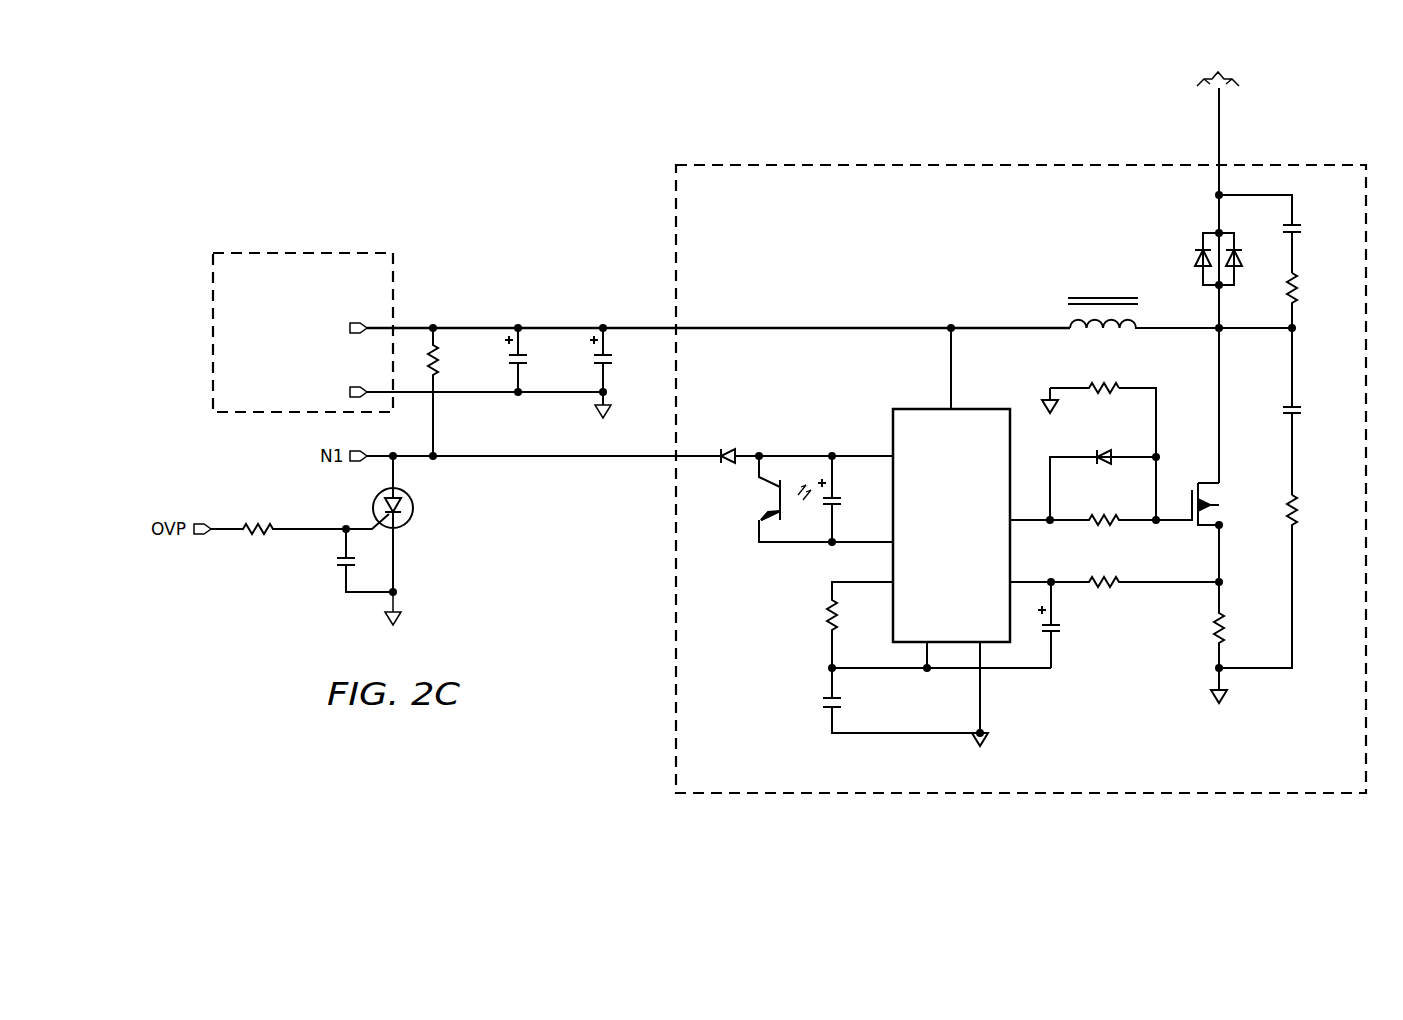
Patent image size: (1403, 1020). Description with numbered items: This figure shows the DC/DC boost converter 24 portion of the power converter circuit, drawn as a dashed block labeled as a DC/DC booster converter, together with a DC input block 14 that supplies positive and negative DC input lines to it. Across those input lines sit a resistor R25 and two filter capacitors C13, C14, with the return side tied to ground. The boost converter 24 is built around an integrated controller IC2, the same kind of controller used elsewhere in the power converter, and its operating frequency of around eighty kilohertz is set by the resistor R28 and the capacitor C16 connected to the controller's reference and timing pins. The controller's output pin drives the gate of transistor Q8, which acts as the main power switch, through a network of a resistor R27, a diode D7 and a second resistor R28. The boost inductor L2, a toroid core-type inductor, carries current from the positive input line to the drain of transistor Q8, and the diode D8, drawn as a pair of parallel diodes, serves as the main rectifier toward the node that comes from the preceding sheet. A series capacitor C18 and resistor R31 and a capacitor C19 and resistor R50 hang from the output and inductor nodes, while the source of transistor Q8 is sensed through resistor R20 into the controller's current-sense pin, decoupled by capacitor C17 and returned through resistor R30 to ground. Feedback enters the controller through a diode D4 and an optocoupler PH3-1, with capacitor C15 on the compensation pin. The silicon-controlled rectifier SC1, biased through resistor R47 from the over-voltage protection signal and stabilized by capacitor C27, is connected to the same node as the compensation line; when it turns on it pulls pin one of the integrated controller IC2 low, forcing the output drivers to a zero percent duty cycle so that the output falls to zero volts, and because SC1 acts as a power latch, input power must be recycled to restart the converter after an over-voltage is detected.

The DC input 14 is at (289, 250).
The DC/DC boost converter 24 is at (810, 162).
The resistor R25 is at (451, 392).
The capacitor C13 is at (532, 360).
The capacitor C14 is at (617, 371).
The silicon-controlled rectifier SC1 is at (398, 540).
The resistor R47 is at (278, 515).
The capacitor C27 is at (345, 559).
The diode D8 is at (1201, 259).
The capacitor C18 is at (1307, 246).
The resistor R31 is at (1309, 300).
The capacitor C19 is at (1307, 411).
The resistor R50 is at (1275, 581).
The inductor L2 is at (1180, 302).
The integrated controller IC2 is at (951, 525).
The diode D4 is at (723, 442).
The optocoupler PH3-1 is at (798, 497).
The capacitor C15 is at (845, 499).
The resistor R28 is at (970, 580).
The capacitor C16 is at (880, 700).
The diode D7 is at (1104, 473).
The resistor R27 is at (1099, 407).
The transistor Q8 is at (1221, 505).
The resistor R20 is at (1114, 570).
The resistor R30 is at (1235, 614).
The capacitor C17 is at (1065, 625).